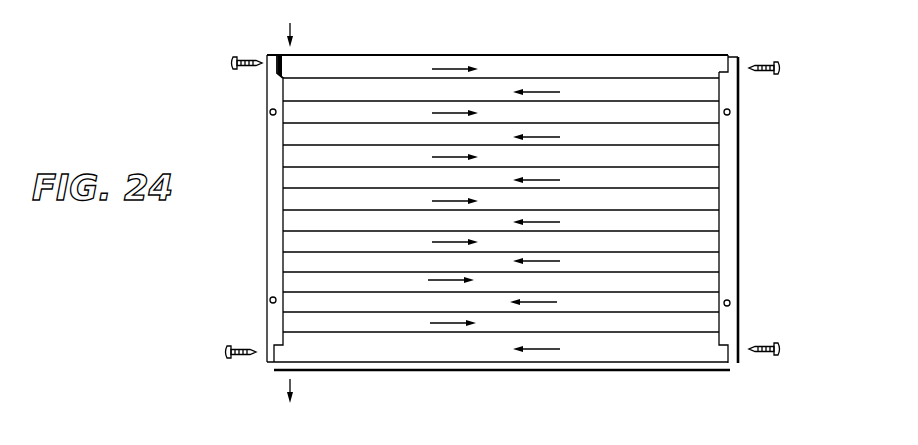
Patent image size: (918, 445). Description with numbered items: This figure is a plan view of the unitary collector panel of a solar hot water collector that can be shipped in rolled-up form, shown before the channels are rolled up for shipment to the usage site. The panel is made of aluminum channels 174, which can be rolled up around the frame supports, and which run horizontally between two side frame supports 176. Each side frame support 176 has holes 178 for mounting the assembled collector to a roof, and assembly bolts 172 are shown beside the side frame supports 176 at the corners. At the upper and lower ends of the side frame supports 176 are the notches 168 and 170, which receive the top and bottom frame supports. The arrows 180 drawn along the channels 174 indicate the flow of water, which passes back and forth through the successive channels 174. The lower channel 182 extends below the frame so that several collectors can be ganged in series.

The notch 168 is at (280, 52).
The notch 170 is at (727, 68).
The assembly bolts 172 is at (247, 72).
The aluminum channels 174 is at (702, 198).
The side frame supports 176 is at (267, 238).
The holes 178 is at (272, 115).
The arrows 180 is at (541, 90).
The lower channel 182 is at (658, 375).